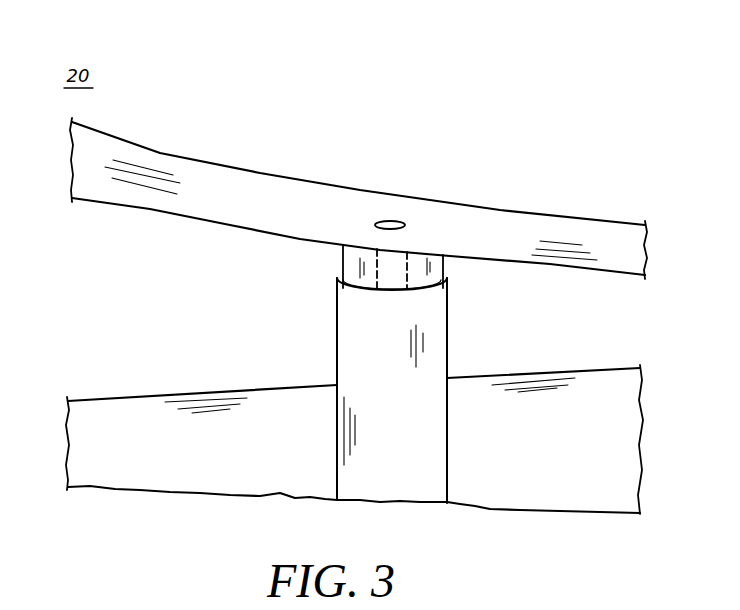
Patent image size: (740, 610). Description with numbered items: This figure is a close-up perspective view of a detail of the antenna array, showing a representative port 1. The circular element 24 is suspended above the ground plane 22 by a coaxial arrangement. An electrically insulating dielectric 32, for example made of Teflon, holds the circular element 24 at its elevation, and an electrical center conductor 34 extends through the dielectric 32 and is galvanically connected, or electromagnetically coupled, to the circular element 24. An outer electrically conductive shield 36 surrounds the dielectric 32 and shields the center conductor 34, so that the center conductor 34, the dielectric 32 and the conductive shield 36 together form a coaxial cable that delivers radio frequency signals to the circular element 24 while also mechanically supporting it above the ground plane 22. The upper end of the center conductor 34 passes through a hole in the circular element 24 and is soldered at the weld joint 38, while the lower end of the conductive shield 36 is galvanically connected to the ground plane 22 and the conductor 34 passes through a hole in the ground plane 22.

The port 1 is at (460, 313).
The ground plane 22 is at (600, 378).
The circular element 24 is at (85, 168).
The dielectric 32 is at (362, 271).
The center conductor 34 is at (343, 253).
The outer electrically conductive shield 36 is at (337, 323).
The weld joint 38 is at (392, 222).